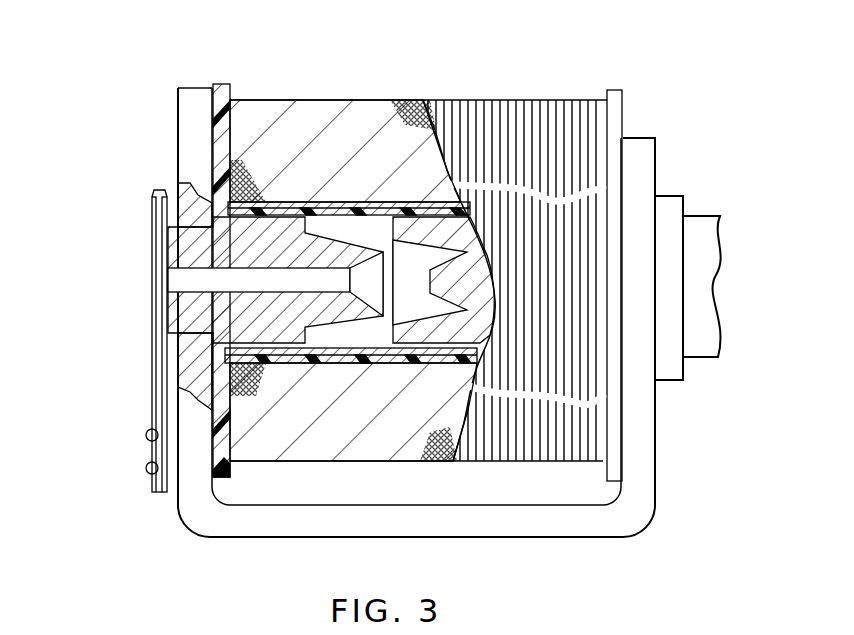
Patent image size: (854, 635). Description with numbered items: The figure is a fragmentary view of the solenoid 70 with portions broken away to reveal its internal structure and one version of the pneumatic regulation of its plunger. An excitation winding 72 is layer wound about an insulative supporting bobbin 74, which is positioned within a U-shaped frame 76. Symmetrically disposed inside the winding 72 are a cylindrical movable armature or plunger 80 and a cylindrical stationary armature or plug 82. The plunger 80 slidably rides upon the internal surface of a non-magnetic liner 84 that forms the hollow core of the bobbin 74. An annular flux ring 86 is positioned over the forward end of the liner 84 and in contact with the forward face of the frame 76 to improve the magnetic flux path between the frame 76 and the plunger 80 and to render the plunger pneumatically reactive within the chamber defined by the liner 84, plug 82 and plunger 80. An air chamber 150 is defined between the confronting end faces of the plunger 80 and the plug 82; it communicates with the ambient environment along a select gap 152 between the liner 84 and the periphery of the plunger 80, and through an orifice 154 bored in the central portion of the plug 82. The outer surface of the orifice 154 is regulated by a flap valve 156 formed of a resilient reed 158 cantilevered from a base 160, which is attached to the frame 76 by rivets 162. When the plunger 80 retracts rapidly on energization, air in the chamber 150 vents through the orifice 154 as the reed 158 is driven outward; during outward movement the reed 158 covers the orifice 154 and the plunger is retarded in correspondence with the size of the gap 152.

The solenoid 70 is at (484, 59).
The excitation winding 72 is at (508, 132).
The bobbin 74 is at (222, 84).
The U-shaped frame 76 is at (600, 527).
The plunger 80 is at (408, 230).
The plug 82 is at (272, 232).
The liner 84 is at (340, 203).
The flux ring 86 is at (672, 196).
The air chamber 150 is at (345, 335).
The gap 152 is at (440, 230).
The orifice 154 is at (182, 279).
The flap valve 156 is at (114, 438).
The reed 158 is at (164, 195).
The base 160 is at (153, 493).
The rivets 162 is at (146, 432).